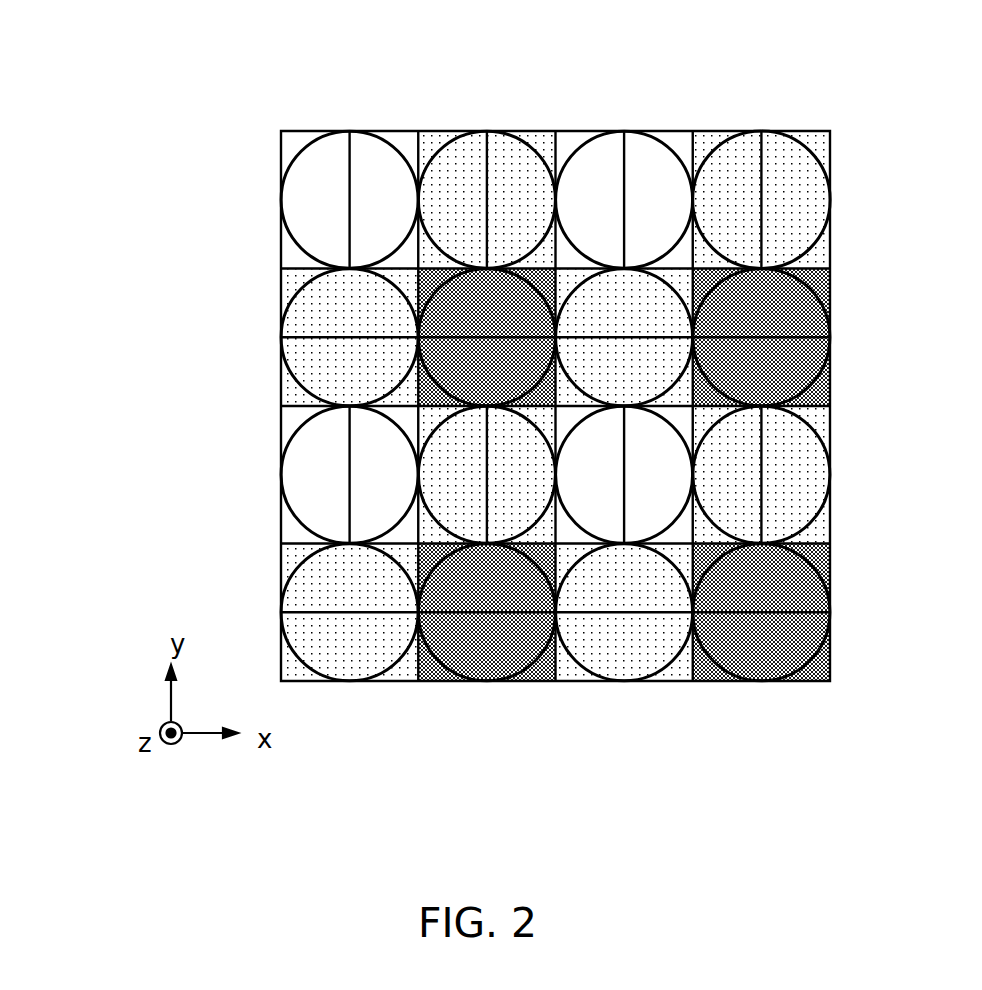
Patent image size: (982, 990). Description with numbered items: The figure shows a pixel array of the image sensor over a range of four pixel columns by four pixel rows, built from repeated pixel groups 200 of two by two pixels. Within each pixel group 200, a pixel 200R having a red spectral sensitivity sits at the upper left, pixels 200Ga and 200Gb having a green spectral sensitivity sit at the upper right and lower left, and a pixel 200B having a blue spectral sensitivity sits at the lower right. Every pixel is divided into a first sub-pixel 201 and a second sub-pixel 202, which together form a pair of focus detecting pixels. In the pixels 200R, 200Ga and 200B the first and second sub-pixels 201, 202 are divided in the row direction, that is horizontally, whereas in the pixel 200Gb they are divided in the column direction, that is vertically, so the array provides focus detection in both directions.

The pixel group 200 is at (437, 375).
The pixel with a spectral sensitivity of R (red) 200R is at (312, 172).
The pixel with a spectral sensitivity of G (green) 200Ga is at (485, 306).
The pixel with a spectral sensitivity of G (green) 200Gb is at (320, 312).
The pixel with a spectral sensitivity of B (blue) 200B is at (458, 357).
The first sub-pixel 201 is at (740, 170).
The second sub-pixel 202 is at (780, 170).